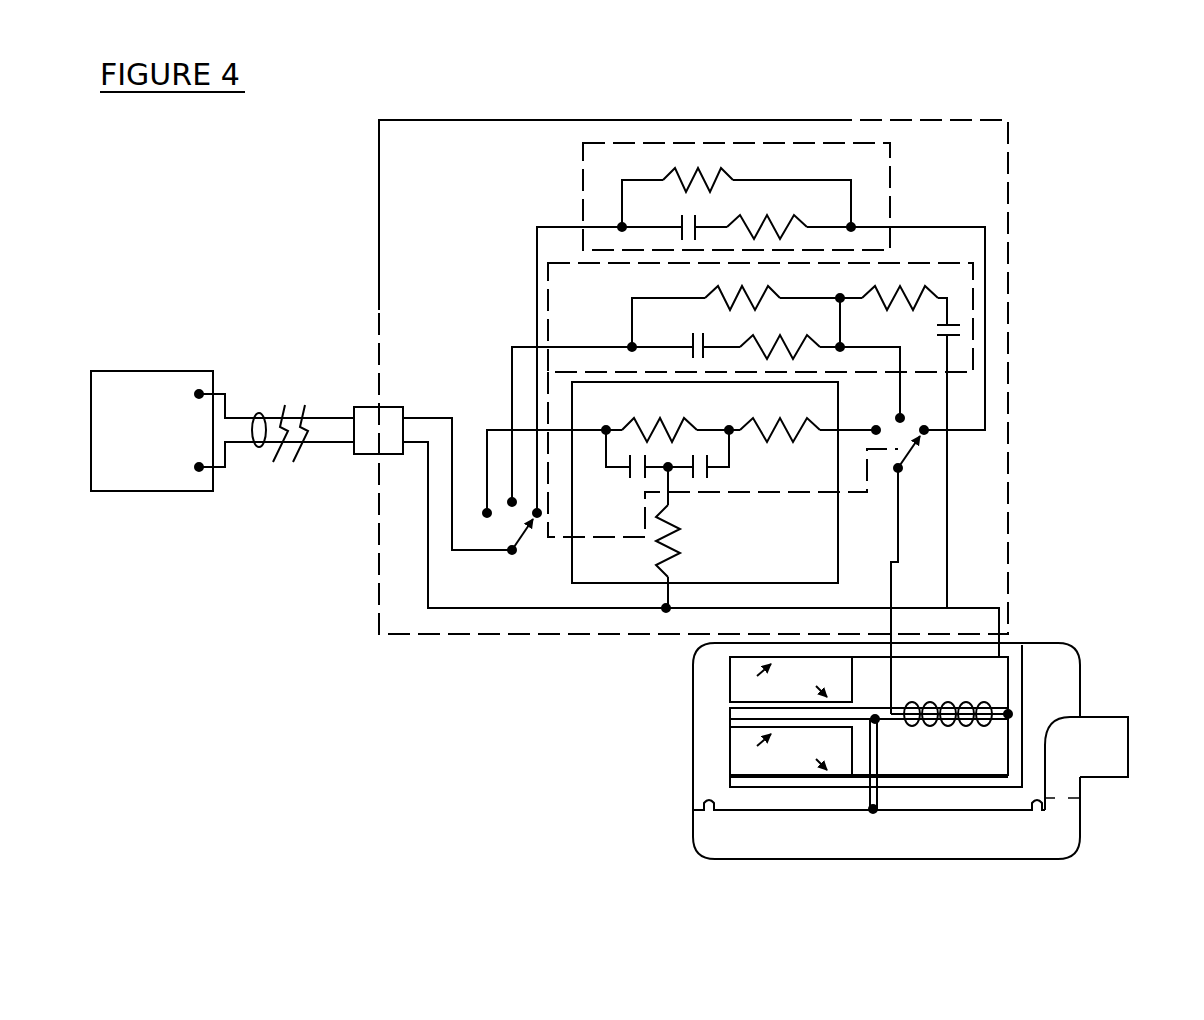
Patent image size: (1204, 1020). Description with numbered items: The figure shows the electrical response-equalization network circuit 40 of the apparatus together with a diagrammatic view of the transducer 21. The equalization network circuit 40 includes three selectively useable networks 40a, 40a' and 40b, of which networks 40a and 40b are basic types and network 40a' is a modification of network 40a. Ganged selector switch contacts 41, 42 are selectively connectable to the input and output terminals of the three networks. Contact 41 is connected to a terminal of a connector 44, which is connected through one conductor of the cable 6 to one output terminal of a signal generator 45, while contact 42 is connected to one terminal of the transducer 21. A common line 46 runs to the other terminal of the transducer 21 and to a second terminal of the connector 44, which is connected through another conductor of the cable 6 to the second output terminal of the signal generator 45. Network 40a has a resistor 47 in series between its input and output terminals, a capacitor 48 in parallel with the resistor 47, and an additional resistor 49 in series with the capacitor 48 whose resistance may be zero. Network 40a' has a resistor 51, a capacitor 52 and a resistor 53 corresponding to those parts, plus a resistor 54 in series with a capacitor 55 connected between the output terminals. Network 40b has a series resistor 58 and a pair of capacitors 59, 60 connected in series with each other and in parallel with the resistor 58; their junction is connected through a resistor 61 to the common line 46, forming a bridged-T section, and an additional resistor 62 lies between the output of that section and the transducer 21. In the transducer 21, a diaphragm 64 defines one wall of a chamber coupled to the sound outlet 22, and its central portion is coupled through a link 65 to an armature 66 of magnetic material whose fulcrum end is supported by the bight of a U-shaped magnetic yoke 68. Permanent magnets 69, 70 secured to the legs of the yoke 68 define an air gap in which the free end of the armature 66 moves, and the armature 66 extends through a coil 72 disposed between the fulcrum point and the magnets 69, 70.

The cable 6 is at (259, 411).
The transducer 21 is at (688, 826).
The sound outlet 22 is at (1111, 714).
The equalization network circuit 40 is at (393, 637).
The network 40a is at (734, 286).
The network 40a' is at (702, 433).
The network 40b is at (661, 488).
The selector switch contact 41 is at (519, 553).
The selector switch contact 42 is at (910, 458).
The connector 44 is at (352, 457).
The signal generator 45 is at (150, 495).
The common line 46 is at (494, 604).
The resistor 47 is at (669, 176).
The capacitor 48 is at (693, 218).
The resistor 49 is at (773, 226).
The resistor 51 is at (717, 294).
The capacitor 52 is at (693, 340).
The resistor 53 is at (783, 339).
The resistor 54 is at (881, 293).
The capacitor 55 is at (934, 330).
The series resistor 58 is at (680, 417).
The capacitor 59 is at (624, 476).
The capacitor 60 is at (712, 478).
The resistor 61 is at (680, 541).
The resistor 62 is at (786, 443).
The diaphragm 64 is at (840, 813).
The link 65 is at (879, 776).
The armature 66 is at (881, 723).
The U-shaped magnetic yoke 68 is at (1025, 713).
The permanent magnet 69 is at (726, 751).
The permanent magnet 70 is at (726, 681).
The coil 72 is at (937, 705).